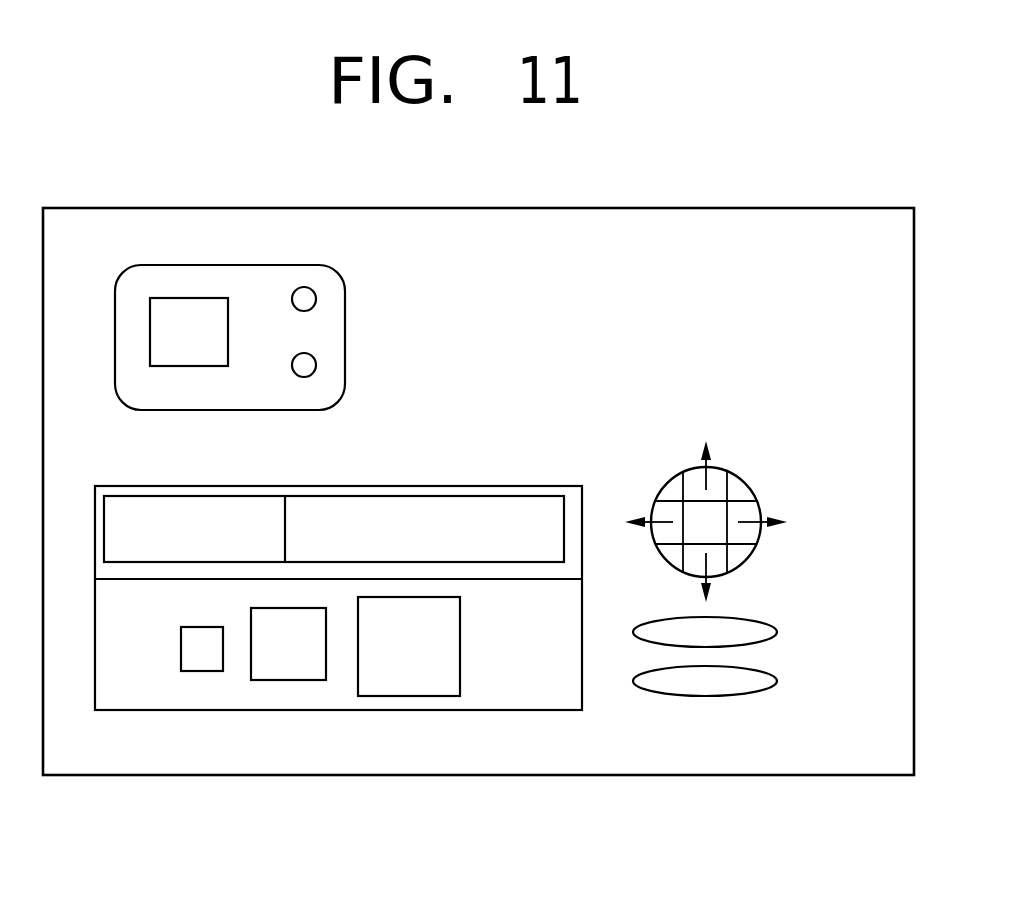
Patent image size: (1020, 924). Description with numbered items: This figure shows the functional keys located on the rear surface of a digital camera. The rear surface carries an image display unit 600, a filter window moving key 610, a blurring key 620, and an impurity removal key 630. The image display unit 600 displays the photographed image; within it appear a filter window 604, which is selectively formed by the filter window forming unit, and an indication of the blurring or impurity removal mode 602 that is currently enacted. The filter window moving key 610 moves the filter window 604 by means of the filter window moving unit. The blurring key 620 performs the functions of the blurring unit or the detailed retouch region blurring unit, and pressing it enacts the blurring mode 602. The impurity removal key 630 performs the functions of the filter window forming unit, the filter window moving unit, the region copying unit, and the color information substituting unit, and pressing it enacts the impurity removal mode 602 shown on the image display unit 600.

The image display unit 600 is at (420, 486).
The blurring or impurity removal mode 602 is at (210, 496).
The filter window 604 is at (388, 696).
The filter window moving key 610 is at (741, 479).
The blurring key 620 is at (777, 632).
The impurity removal key 630 is at (777, 681).